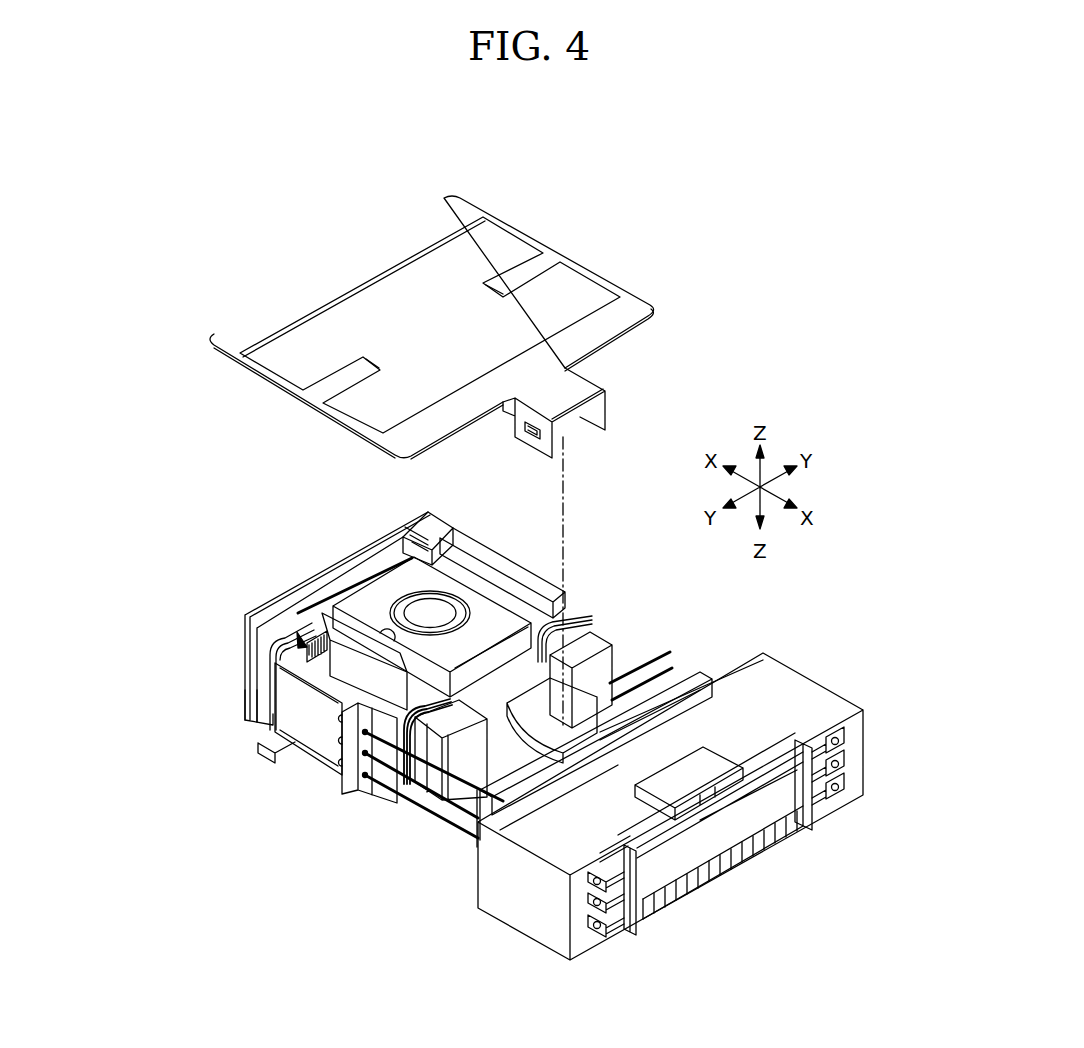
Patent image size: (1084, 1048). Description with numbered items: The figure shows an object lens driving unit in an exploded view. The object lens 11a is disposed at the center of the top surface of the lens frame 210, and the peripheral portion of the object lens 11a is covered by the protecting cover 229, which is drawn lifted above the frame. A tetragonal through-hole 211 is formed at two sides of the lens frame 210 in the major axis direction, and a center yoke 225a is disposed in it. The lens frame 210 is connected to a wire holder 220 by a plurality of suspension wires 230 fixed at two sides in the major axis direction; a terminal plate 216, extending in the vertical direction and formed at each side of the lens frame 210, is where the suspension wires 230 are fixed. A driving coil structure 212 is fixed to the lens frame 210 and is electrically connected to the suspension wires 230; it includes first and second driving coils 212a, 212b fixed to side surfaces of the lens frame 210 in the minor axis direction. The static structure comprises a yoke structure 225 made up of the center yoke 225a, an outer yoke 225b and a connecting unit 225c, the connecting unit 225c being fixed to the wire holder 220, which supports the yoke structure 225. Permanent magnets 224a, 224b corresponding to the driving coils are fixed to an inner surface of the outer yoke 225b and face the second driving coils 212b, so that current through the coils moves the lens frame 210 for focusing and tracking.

The protecting cover 229 is at (353, 262).
The wire holder 220 is at (818, 697).
The yoke structure 225 is at (338, 566).
The center yoke 225a is at (332, 635).
The outer yoke 225b is at (598, 662).
The connecting unit 225c is at (552, 592).
The lens frame 210 is at (398, 580).
The object lens 11a is at (445, 613).
The permanent magnet 224a is at (423, 532).
The permanent magnet 224b is at (583, 645).
The tetragonal through-hole 211 is at (262, 629).
The driving coil structure 212 is at (294, 836).
The first driving coil 212a is at (267, 703).
The second driving coil 212b is at (245, 704).
The terminal plate 216 is at (342, 781).
The suspension wires 230 is at (647, 690).